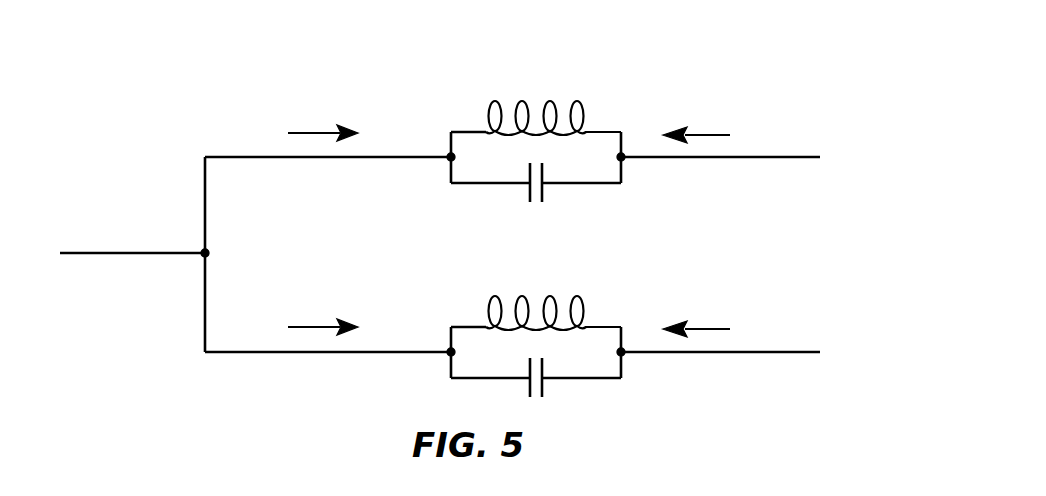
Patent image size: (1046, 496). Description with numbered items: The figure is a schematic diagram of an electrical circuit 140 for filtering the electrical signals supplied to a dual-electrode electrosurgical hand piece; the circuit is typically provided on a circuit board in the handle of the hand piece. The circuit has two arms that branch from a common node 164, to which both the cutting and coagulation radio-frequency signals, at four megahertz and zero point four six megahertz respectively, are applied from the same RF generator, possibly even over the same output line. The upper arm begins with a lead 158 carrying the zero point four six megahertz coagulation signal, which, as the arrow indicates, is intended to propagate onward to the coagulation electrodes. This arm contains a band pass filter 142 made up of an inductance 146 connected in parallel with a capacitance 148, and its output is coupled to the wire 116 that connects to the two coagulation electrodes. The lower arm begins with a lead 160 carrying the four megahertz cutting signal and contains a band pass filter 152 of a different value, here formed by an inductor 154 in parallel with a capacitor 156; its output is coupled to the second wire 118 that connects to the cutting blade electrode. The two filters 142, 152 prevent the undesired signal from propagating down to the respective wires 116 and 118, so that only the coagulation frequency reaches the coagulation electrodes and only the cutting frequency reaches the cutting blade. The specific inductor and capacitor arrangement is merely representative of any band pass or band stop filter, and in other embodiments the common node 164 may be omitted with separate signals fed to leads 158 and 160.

The electrical circuit 140 is at (207, 89).
The common node 164 is at (138, 253).
The lead 158 is at (333, 157).
The band pass filter 142 is at (600, 183).
The inductance 146 is at (497, 107).
The capacitance 148 is at (537, 202).
The wire (lead) 116 is at (747, 157).
The lead 160 is at (333, 352).
The band pass filter 152 is at (564, 345).
The inductor 154 is at (535, 296).
The capacitor 156 is at (536, 393).
The second wire (lead) 118 is at (747, 352).